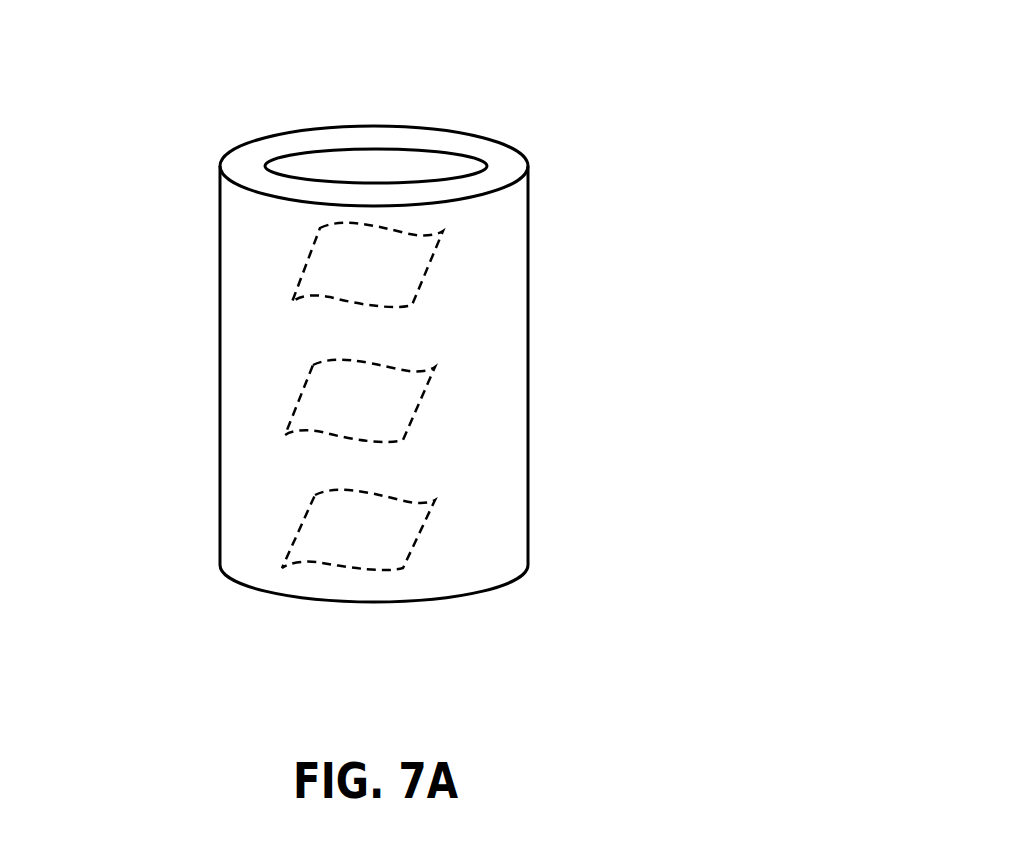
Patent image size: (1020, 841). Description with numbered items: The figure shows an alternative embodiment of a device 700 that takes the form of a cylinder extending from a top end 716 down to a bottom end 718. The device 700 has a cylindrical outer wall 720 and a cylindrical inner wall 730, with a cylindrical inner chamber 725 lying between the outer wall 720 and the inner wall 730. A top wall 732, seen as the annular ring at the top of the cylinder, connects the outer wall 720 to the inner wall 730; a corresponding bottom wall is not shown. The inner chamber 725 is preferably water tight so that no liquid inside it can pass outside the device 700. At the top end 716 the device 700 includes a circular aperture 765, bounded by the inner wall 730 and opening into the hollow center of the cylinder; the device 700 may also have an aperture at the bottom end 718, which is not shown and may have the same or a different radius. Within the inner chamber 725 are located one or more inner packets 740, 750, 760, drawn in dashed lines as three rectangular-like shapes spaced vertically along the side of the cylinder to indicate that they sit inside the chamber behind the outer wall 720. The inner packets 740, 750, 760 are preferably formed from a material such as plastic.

The device 700 is at (408, 43).
The top end 716 is at (528, 165).
The bottom end 718 is at (487, 588).
The cylindrical outer wall 720 is at (238, 217).
The cylindrical inner chamber 725 is at (488, 208).
The cylindrical inner wall 730 is at (413, 167).
The top wall 732 is at (492, 158).
The inner packet 740 is at (303, 267).
The inner packet 750 is at (297, 405).
The inner packet 760 is at (293, 537).
The circular aperture 765 is at (328, 148).